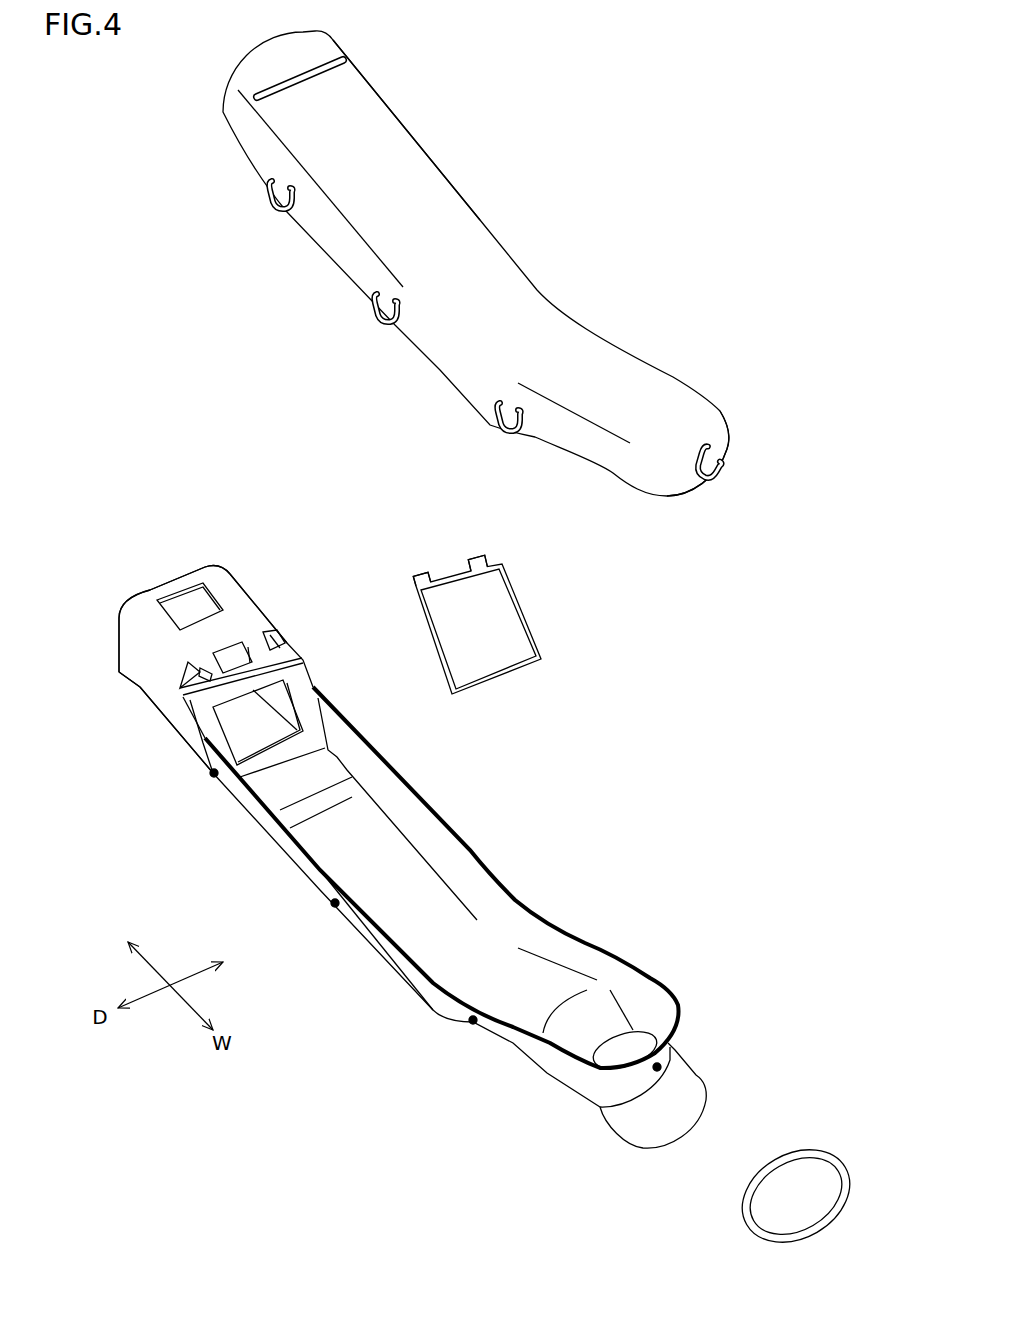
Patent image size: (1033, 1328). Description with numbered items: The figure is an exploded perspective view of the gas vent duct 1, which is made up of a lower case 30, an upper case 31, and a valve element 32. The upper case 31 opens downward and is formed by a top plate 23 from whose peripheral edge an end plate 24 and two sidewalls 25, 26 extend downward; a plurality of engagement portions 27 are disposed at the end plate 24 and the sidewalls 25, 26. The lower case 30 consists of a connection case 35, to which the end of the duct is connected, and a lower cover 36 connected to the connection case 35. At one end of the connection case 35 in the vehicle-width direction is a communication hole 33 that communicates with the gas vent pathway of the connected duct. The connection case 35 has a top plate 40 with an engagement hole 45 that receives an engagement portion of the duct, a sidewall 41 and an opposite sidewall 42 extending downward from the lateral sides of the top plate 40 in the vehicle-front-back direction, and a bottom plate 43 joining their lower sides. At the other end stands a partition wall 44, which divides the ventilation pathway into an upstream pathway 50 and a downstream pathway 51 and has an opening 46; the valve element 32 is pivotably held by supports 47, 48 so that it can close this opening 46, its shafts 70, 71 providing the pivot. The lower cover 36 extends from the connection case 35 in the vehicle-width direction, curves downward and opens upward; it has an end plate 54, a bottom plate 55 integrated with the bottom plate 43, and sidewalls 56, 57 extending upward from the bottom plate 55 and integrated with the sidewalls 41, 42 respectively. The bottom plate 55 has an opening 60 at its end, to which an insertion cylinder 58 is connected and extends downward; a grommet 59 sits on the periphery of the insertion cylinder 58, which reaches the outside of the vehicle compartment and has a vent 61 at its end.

The gas vent duct 1 is at (593, 98).
The top plate 23 is at (457, 217).
The end plate 24 is at (730, 430).
The sidewall 25 is at (330, 240).
The sidewall 26 is at (495, 233).
The engagement portion 27 is at (270, 215).
The lower case 30 is at (538, 813).
The upper case 31 is at (602, 345).
The valve element 32 is at (512, 627).
The communication hole 33 is at (213, 612).
The connection case 35 is at (103, 578).
The lower cover 36 is at (358, 943).
The top plate 40 is at (243, 607).
The sidewall 41 is at (143, 687).
The sidewall 42 is at (265, 618).
The bottom plate 43 is at (263, 760).
The partition wall 44 is at (308, 710).
The engagement hole 45 is at (210, 577).
The opening 46 is at (233, 770).
The support 47 is at (202, 690).
The support 48 is at (272, 650).
The upstream pathway 50 is at (262, 707).
The downstream pathway 51 is at (492, 957).
The end plate 54 is at (672, 1052).
The bottom plate 55 is at (533, 975).
The sidewall 56 is at (308, 872).
The sidewall 57 is at (424, 798).
The insertion cylinder 58 is at (651, 1133).
The grommet 59 is at (813, 1150).
The opening 60 is at (633, 1030).
The vent 61 is at (692, 1130).
The shaft 70 is at (424, 578).
The shaft 71 is at (478, 558).